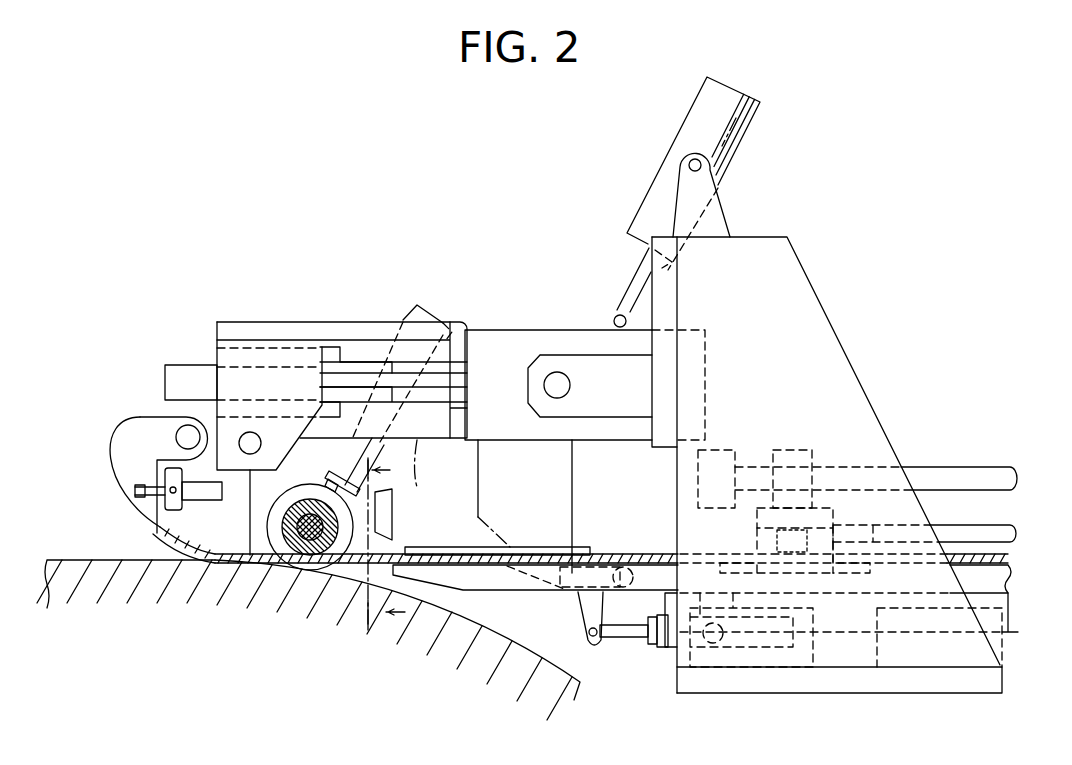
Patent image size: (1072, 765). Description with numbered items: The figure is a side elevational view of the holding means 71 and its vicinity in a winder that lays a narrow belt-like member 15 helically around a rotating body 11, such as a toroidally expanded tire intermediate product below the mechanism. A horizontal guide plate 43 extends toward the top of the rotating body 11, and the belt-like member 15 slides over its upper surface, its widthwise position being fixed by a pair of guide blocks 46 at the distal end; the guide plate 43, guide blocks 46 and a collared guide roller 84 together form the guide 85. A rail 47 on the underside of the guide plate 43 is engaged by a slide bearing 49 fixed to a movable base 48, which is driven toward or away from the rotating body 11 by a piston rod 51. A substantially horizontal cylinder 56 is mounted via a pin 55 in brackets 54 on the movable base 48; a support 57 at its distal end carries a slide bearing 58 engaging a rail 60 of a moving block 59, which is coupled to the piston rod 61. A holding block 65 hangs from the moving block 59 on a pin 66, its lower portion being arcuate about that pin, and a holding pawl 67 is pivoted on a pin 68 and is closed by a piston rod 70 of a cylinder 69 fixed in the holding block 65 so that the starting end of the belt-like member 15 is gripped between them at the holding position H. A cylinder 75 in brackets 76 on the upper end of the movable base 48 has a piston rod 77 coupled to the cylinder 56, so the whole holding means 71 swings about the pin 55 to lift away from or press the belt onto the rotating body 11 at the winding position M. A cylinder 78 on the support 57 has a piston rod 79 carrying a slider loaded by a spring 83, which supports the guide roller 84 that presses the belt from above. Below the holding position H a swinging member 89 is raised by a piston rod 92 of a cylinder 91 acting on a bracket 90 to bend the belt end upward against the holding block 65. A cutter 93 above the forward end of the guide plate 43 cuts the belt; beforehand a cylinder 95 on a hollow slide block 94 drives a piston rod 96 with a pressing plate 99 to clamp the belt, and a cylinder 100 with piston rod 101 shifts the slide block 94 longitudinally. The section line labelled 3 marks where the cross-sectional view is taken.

The rotating body 11 is at (83, 560).
The belt-like member 15 is at (610, 562).
The guide plate 43 is at (1000, 580).
The guide blocks 46 is at (452, 547).
The rail 47 is at (1010, 618).
The movable base 48 is at (890, 383).
The slide bearing 49 is at (795, 668).
The piston rod 51 is at (970, 467).
The brackets 54 is at (622, 405).
The pin 55 is at (557, 372).
The cylinder 56 is at (500, 340).
The support 57 is at (372, 321).
The slide bearing 58 is at (330, 349).
The moving block 59 is at (253, 370).
The rail 60 is at (183, 368).
The piston rod 61 is at (465, 388).
The holding block 65 is at (217, 556).
The pin 66 is at (258, 447).
The holding pawl 67 is at (110, 433).
The pin 68 is at (178, 432).
The cylinder 69 is at (221, 500).
The piston rod 70 is at (160, 482).
The holding means 71 is at (91, 500).
The cylinder 75 is at (680, 137).
The brackets 76 is at (720, 212).
The piston rod 77 is at (631, 278).
The cylinder 78 is at (407, 320).
The piston rod 79 is at (362, 437).
The spring 83 is at (298, 486).
The guide roller 84 is at (343, 563).
The guide 85 is at (474, 605).
The swinging member 89 is at (553, 548).
The bracket 90 is at (580, 608).
The cylinder 91 is at (665, 645).
The piston rod 92 is at (620, 638).
The cutter 93 is at (393, 513).
The slide block 94 is at (830, 490).
The cylinder 95 is at (788, 450).
The piston rod 96 is at (843, 520).
The pressing plate 99 is at (755, 545).
The cylinder 100 is at (1012, 535).
The piston rod 101 is at (857, 562).
The section line 3 is at (393, 544).
The holding position H is at (562, 575).
The winding position M is at (230, 567).